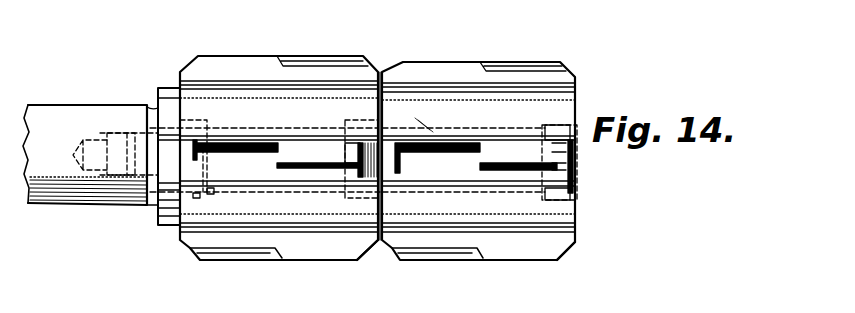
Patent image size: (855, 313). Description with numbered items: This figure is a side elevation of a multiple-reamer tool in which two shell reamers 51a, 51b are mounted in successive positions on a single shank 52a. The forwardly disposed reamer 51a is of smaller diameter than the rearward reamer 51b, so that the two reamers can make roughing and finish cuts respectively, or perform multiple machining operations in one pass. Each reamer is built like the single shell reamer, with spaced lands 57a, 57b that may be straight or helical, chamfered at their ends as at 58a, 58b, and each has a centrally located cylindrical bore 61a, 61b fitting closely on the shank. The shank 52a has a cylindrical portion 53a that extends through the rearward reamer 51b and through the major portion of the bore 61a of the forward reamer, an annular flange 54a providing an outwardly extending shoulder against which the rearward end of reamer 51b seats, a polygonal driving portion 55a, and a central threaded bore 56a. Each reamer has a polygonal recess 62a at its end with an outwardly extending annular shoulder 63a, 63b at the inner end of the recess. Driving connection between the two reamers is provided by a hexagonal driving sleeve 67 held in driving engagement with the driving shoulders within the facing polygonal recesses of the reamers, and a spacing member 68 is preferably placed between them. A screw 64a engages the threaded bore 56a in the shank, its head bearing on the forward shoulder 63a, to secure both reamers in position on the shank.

The forward shell reamer 51a is at (478, 62).
The rearward shell reamer 51b is at (250, 56).
The shank 52a is at (60, 103).
The cylindrical portion 53a is at (498, 193).
The annular flange 54a is at (163, 88).
The polygonal driving portion 55a is at (197, 195).
The threaded bore 56a is at (116, 137).
The land of forward reamer 57a is at (445, 253).
The land of rearward reamer 57b is at (240, 253).
The chamfer of forward reamer 58a is at (568, 253).
The chamfer of rearward reamer 58b is at (368, 258).
The cylindrical bore of forward reamer 61a is at (500, 130).
The cylindrical bore of rearward reamer 61b is at (278, 128).
The polygonal recess 62a is at (578, 128).
The annular shoulder of forward reamer 63a is at (540, 125).
The annular shoulder of rearward reamer 63b is at (214, 192).
The screw 64a is at (574, 192).
The hexagonal driving sleeve 67 is at (345, 123).
The spacing member 68 is at (383, 100).